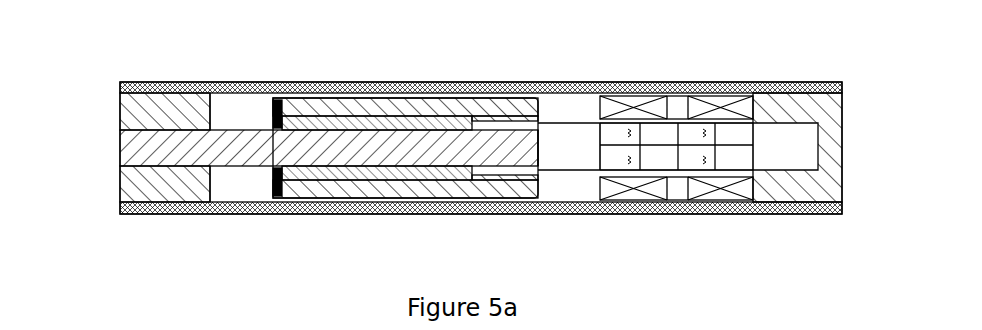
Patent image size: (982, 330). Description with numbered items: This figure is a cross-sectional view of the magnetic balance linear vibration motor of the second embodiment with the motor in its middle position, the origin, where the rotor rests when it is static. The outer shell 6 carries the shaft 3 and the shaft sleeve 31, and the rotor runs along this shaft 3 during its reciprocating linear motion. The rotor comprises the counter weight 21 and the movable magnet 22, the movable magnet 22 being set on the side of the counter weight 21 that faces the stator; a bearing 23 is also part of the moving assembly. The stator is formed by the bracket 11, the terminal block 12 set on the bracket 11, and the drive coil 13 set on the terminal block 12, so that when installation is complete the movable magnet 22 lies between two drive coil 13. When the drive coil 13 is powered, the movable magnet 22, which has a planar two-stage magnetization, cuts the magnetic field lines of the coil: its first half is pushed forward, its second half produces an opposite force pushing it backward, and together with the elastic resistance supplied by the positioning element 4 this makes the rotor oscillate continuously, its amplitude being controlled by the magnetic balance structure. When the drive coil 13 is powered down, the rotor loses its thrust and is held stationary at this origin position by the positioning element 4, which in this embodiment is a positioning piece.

The shaft sleeve 31 is at (127, 108).
The shaft 3 is at (137, 148).
The shell 6 is at (200, 82).
The positioning element 4 is at (282, 196).
The bearing 23 is at (422, 198).
The counter weight 21 is at (510, 198).
The drive coil 13 is at (631, 93).
The movable magnet 22 is at (727, 137).
The bracket 11 is at (705, 214).
The terminal block 12 is at (802, 214).